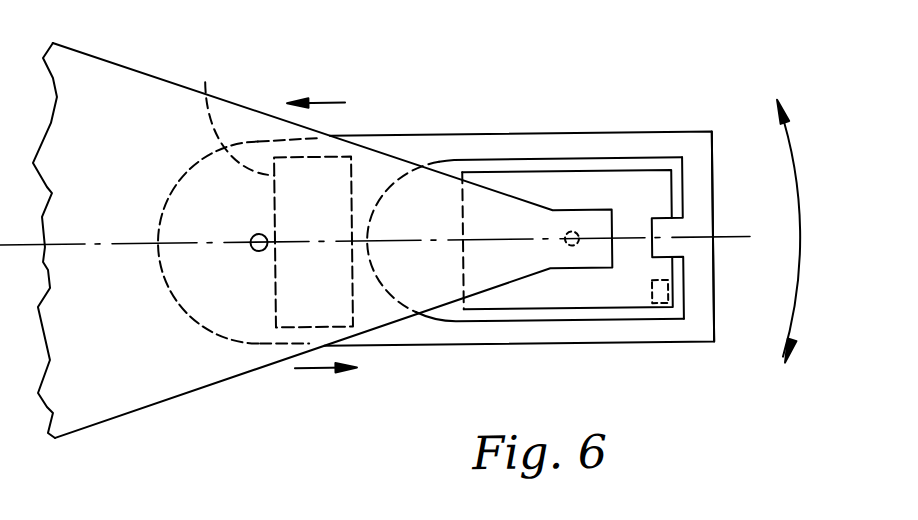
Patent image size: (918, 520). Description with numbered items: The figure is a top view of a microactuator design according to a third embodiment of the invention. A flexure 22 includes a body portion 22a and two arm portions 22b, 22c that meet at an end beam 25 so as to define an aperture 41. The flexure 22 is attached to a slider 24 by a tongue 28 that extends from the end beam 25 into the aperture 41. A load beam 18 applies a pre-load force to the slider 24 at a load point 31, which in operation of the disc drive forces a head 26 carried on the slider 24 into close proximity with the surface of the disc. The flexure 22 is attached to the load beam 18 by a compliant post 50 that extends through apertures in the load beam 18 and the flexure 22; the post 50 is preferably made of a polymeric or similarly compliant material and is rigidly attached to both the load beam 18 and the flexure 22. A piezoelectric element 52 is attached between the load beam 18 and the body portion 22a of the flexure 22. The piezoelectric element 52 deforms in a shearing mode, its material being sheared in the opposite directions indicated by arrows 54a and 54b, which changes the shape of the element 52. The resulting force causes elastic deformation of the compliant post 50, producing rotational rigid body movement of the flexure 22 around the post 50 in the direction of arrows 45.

The load beam 18 is at (74, 45).
The piezoelectric element 52 is at (236, 112).
The body portion 22a is at (181, 178).
The compliant post 50 is at (253, 250).
The arrow 54a is at (325, 99).
The arrow 54b is at (312, 369).
The aperture 41 is at (451, 167).
The flexure 22 is at (654, 135).
The arm portion 22b is at (533, 142).
The arm portion 22c is at (472, 326).
The end beam 25 is at (714, 186).
The tongue 28 is at (650, 250).
The slider 24 is at (524, 313).
The load point 31 is at (571, 234).
The head 26 is at (652, 308).
The arrows 45 is at (799, 312).